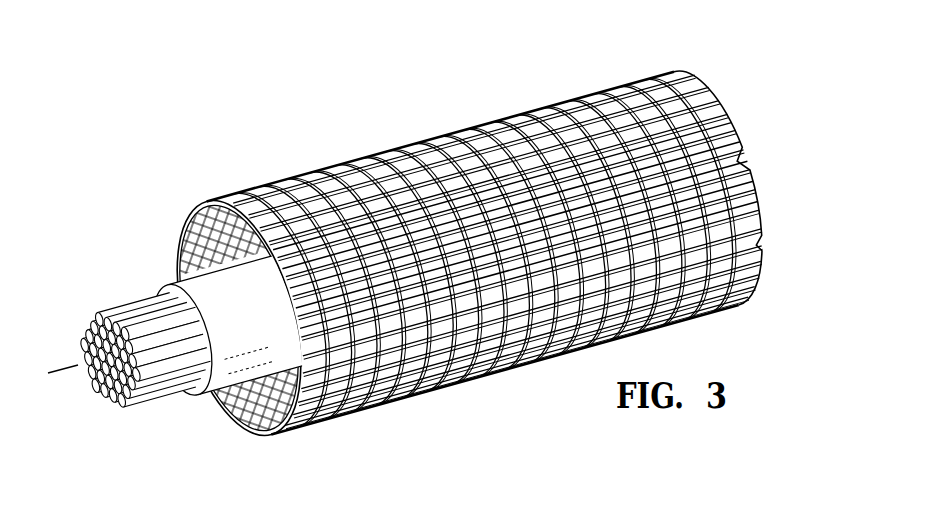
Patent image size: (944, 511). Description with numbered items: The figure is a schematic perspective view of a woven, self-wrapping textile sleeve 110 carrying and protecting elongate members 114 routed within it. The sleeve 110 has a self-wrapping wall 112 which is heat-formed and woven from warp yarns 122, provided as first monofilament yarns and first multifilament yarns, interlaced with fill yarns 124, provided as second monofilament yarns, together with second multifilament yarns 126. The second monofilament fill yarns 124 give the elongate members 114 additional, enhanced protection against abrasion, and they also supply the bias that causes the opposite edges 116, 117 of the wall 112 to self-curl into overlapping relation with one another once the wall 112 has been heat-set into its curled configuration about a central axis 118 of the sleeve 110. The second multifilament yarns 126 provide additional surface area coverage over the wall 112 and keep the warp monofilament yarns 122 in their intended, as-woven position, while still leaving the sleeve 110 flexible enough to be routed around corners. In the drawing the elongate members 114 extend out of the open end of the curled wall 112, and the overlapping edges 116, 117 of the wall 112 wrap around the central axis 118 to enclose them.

The sleeve 110 is at (415, 122).
The self-wrapping wall 112 is at (553, 104).
The elongate members 114 is at (172, 276).
The opposite edge 116 is at (738, 214).
The opposite edge 117 is at (193, 221).
The central axis 118 is at (805, 148).
The warp yarns 122 is at (307, 174).
The fill yarns 124 is at (415, 398).
The second multifilament yarns 126 is at (380, 401).